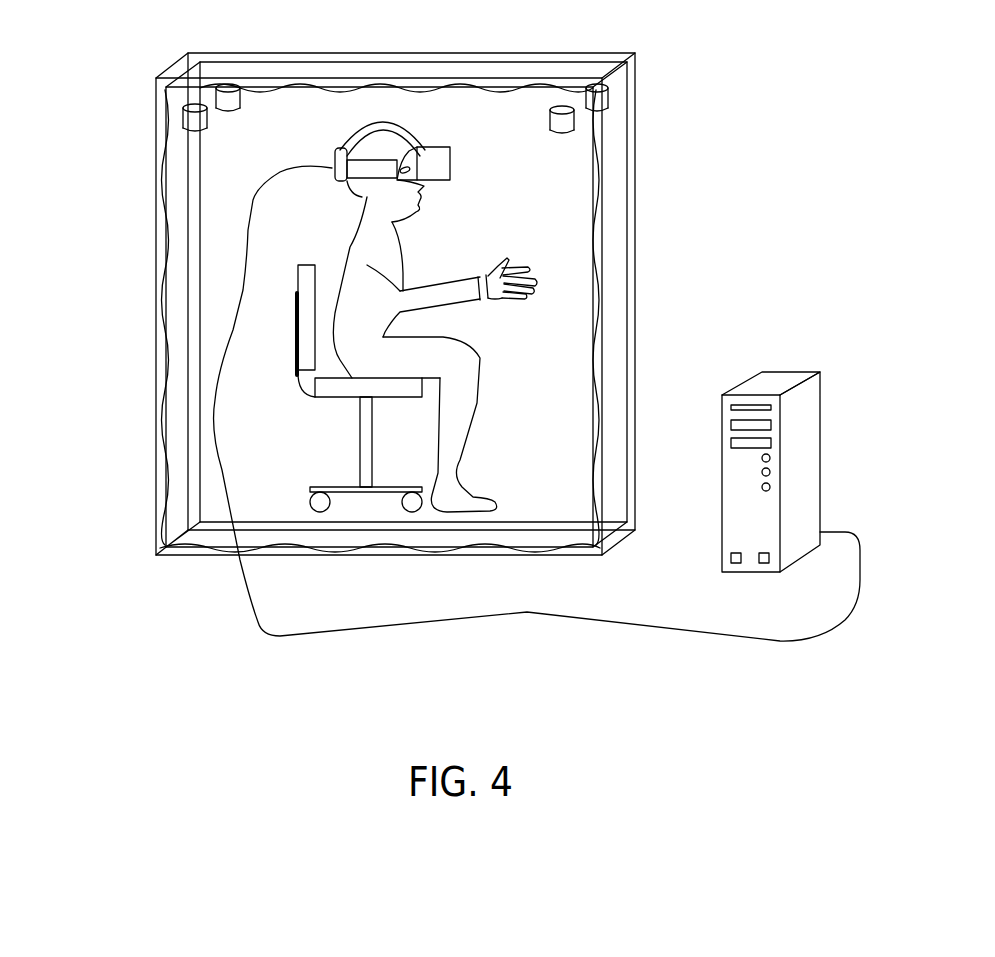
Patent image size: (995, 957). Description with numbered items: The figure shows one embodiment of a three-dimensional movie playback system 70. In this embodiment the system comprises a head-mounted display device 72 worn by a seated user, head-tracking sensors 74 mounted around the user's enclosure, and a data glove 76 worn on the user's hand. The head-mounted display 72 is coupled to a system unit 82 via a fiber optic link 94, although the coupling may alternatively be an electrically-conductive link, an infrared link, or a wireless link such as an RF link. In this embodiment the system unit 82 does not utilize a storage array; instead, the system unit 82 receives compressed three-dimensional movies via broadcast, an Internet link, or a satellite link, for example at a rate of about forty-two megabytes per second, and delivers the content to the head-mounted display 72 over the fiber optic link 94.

The 3D movie playback system 70 is at (93, 224).
The head-mounted display device 72 is at (449, 167).
The head-tracking sensors 74 is at (228, 85).
The data glove 76 is at (509, 292).
The system unit 82 is at (785, 378).
The fiber optic link 94 is at (842, 530).